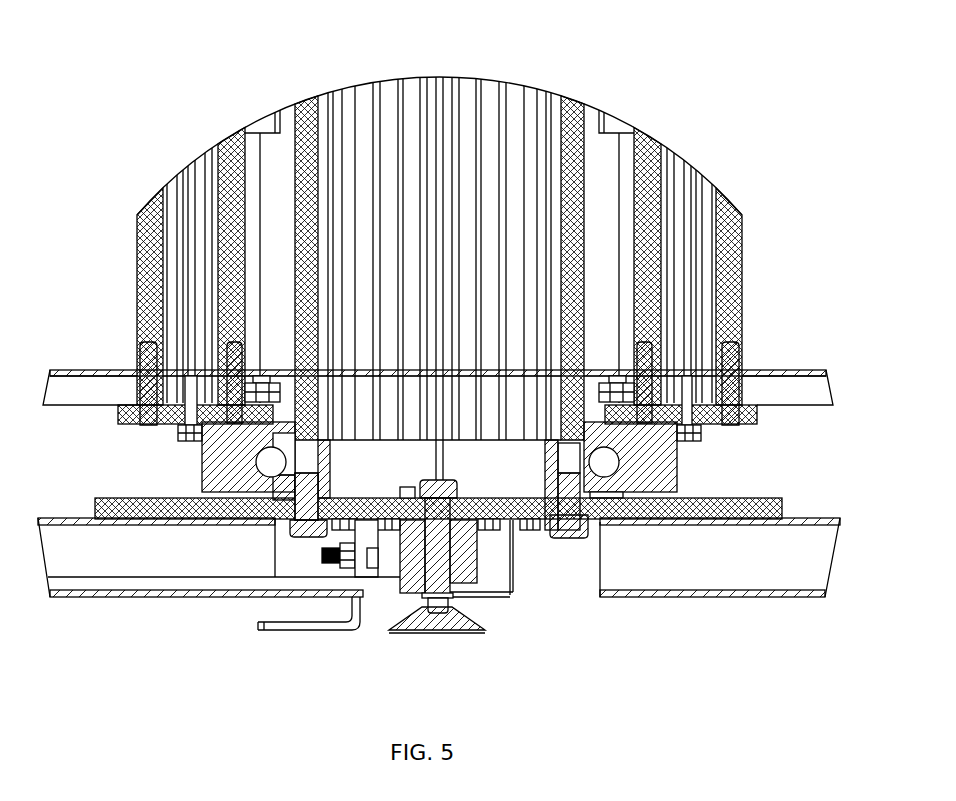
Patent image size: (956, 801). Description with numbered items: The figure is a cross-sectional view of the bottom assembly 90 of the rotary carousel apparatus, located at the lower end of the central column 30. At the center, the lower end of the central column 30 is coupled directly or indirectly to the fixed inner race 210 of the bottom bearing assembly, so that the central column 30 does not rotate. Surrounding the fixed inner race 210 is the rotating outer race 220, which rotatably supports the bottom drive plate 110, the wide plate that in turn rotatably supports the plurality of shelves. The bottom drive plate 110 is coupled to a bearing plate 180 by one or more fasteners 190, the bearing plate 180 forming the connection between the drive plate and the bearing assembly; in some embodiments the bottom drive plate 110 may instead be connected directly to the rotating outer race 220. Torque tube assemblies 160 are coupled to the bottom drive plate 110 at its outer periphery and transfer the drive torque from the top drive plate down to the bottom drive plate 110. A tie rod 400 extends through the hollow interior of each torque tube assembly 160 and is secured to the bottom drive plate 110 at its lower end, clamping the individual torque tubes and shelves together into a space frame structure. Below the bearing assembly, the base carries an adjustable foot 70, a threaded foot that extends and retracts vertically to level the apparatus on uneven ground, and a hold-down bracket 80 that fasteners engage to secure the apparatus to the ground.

The bottom assembly 90 is at (278, 61).
The central column 30 is at (568, 120).
The torque tube assembly 160 is at (137, 213).
The tie rod 400 is at (187, 340).
The bottom drive plate 110 is at (757, 423).
The rotating outer race 220 is at (660, 463).
The bearing plate 180 is at (742, 505).
The fastener 190 is at (322, 554).
The fixed inner race 210 is at (593, 520).
The hold-down bracket 80 is at (330, 630).
The adjustable foot 70 is at (455, 620).